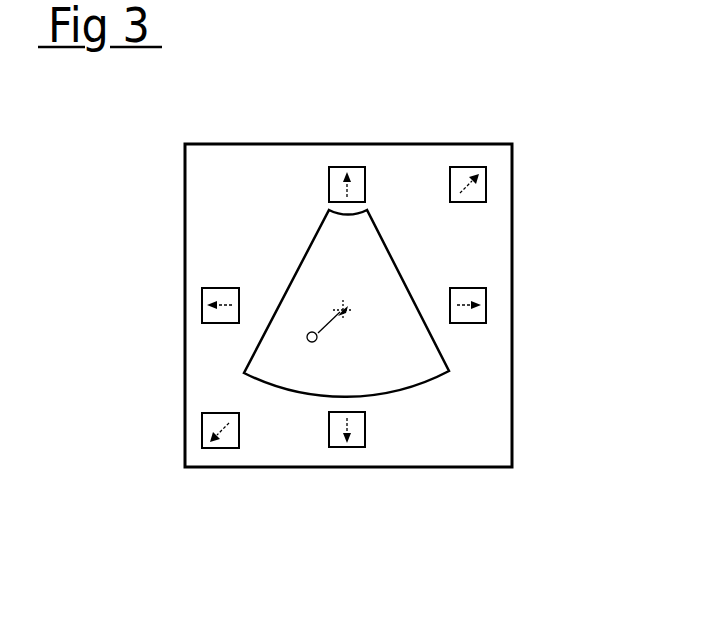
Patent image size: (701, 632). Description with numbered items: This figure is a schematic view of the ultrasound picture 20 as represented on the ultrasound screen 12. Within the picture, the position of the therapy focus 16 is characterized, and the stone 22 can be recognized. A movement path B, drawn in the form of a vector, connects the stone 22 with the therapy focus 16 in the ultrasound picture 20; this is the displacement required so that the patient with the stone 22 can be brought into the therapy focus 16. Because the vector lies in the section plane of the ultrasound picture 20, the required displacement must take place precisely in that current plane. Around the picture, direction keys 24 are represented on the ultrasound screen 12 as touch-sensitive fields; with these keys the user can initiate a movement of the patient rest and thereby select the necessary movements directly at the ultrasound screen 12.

The ultrasound screen 12 is at (220, 162).
The ultrasound picture 20 is at (317, 262).
The therapy focus 16 is at (345, 309).
The stone 22 is at (307, 336).
The direction keys 24 is at (486, 192).
The movement path B is at (331, 327).